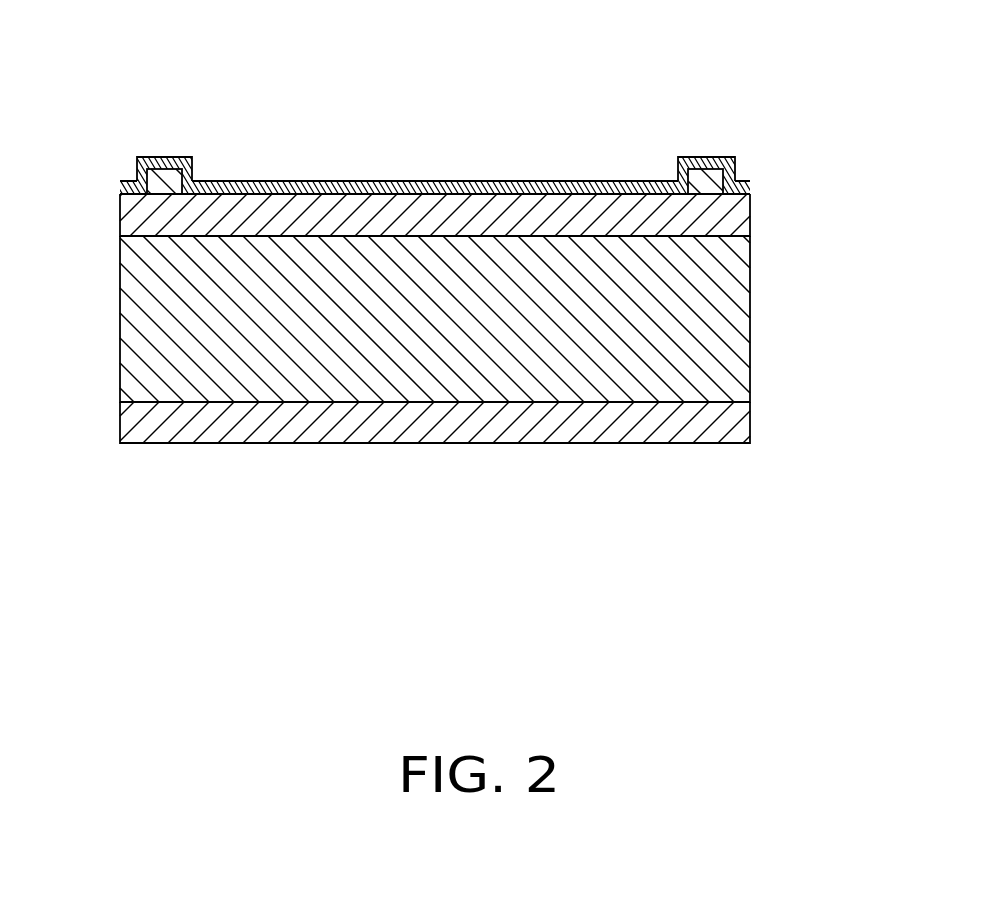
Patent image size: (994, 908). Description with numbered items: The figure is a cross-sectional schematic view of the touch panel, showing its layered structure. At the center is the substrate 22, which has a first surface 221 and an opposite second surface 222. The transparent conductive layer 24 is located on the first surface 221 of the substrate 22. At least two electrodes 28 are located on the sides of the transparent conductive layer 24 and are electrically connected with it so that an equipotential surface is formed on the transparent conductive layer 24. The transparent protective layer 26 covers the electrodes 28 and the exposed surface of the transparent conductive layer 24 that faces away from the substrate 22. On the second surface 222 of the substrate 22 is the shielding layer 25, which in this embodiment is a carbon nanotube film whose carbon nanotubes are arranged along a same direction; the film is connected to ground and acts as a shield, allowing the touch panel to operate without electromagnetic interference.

The substrate 22 is at (688, 335).
The first surface 221 is at (207, 238).
The second surface 222 is at (208, 397).
The transparent conductive layer 24 is at (717, 217).
The shielding layer 25 is at (590, 418).
The transparent protective layer 26 is at (297, 181).
The electrodes 28 is at (157, 157).